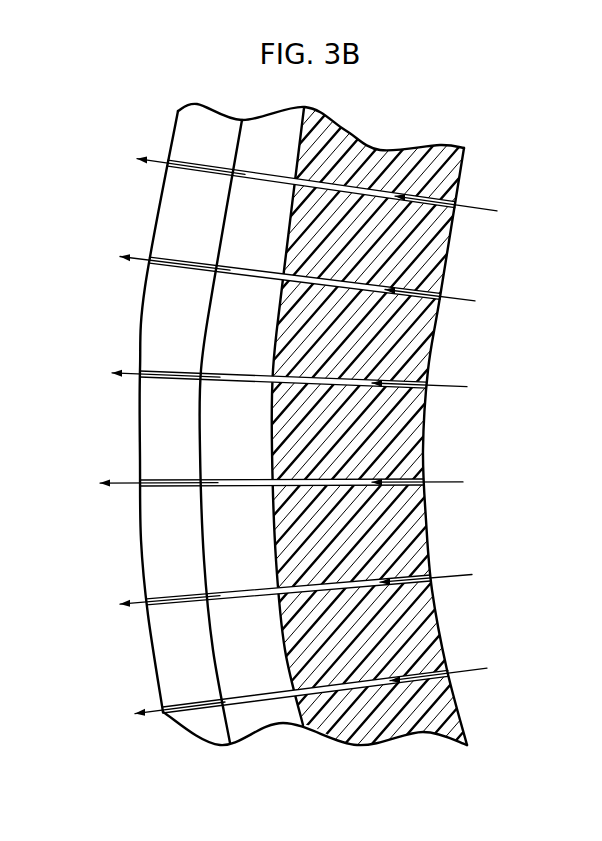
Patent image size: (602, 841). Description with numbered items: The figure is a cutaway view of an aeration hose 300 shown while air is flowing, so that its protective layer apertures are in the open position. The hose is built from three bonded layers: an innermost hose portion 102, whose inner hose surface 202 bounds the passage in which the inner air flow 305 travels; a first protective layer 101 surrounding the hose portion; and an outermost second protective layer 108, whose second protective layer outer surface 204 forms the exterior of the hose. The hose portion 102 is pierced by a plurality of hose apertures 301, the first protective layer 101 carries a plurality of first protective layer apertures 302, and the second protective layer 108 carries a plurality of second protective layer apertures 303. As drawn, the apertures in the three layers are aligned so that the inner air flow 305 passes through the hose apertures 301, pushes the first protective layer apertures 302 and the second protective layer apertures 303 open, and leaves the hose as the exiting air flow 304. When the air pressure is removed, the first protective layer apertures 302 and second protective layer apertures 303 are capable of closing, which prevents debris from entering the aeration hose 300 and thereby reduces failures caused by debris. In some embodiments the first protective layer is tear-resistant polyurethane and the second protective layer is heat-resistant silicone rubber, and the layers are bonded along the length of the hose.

The aeration hose 300 is at (138, 114).
The exiting air flow 304 is at (310, 164).
The inner air flow 305 is at (484, 210).
The first protective layer 101 is at (250, 212).
The hose portion 102 is at (395, 233).
The second protective layer outer surface 204 is at (142, 330).
The inner hose surface 202 is at (427, 360).
The first protective layer apertures 302 is at (247, 480).
The second protective layer 108 is at (100, 411).
The hose apertures 301 is at (353, 580).
The second protective layer apertures 303 is at (292, 570).